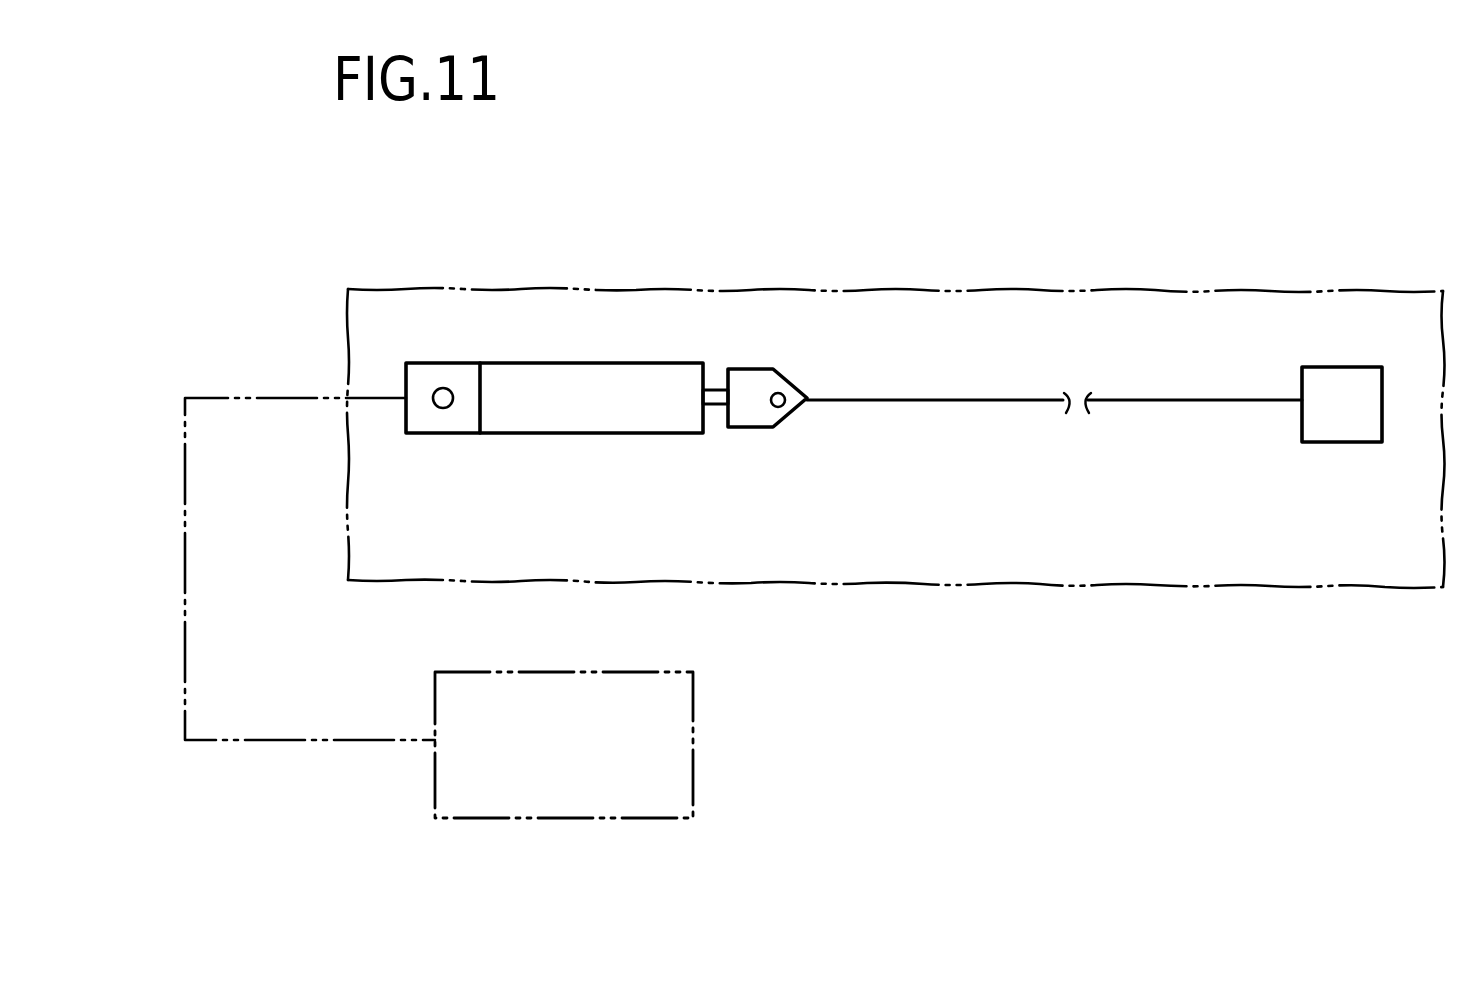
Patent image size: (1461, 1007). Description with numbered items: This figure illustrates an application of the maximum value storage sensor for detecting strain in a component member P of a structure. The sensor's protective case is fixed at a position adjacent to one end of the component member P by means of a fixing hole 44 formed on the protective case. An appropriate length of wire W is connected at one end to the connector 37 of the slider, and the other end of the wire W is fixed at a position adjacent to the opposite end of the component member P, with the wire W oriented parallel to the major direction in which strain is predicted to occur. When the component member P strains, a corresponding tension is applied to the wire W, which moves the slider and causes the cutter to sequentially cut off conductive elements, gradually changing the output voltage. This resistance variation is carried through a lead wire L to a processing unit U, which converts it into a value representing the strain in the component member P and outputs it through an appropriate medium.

The connector 37 is at (752, 383).
The fixing hole 44 is at (440, 407).
The wire W is at (937, 398).
The component member P is at (922, 540).
The lead wire L is at (185, 618).
The processing unit U is at (572, 818).